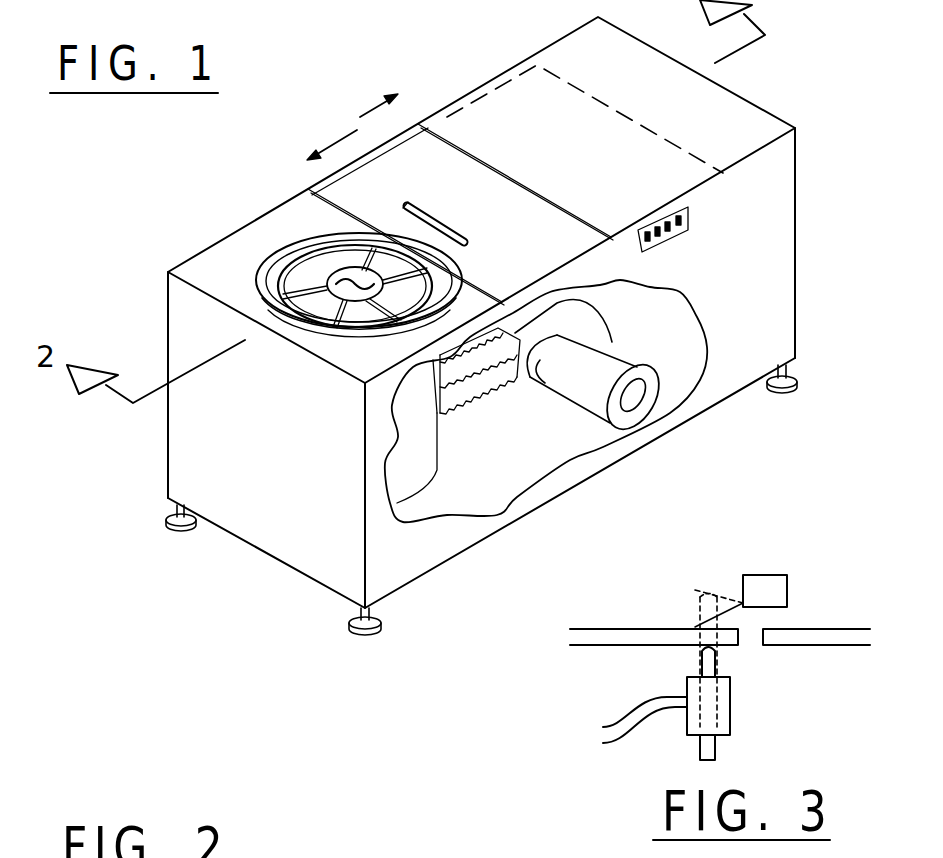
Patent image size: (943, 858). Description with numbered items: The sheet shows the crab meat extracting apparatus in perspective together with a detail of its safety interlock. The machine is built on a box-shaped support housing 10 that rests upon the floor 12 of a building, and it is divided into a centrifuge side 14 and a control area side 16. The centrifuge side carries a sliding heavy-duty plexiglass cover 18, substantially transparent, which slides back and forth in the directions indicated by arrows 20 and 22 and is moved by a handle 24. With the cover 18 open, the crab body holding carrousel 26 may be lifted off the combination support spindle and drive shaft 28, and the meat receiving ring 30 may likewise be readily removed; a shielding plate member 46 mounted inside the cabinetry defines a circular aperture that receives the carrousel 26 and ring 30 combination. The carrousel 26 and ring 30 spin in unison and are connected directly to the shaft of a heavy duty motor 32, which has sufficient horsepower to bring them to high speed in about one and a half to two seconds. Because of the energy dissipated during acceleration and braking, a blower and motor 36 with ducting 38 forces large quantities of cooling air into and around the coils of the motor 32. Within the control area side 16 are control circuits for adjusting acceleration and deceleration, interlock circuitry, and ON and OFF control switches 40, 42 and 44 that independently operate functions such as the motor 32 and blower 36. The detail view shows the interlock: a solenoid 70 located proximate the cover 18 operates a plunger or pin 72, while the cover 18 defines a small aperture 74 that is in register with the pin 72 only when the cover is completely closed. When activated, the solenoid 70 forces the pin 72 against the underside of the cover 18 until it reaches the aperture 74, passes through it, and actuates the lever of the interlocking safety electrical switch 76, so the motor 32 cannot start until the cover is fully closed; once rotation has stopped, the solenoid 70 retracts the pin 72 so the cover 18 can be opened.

In FIG. 1, the housing 10 is at (207, 443).
In FIG. 1, the floor 12 is at (494, 625).
In FIG. 1, the centrifuge side 14 is at (243, 260).
In FIG. 1, the control area side 16 is at (606, 66).
In FIG. 1, the sliding plexiglass cover 18 is at (507, 230).
In FIG. 3, the sliding plexiglass cover 18 is at (813, 637).
In FIG. 1, the arrow 20 is at (368, 103).
In FIG. 1, the arrow 22 is at (340, 142).
In FIG. 1, the handle 24 is at (448, 218).
In FIG. 1, the crab body holding carrousel 26 is at (297, 263).
In FIG. 1, the combination support spindle and drive shaft 28 is at (358, 283).
In FIG. 1, the meat receiving ring 30 is at (312, 328).
In FIG. 1, the heavy duty motor 32 is at (424, 459).
In FIG. 1, the blower and motor 36 is at (618, 420).
In FIG. 1, the ducting 38 is at (480, 383).
In FIG. 1, the control switch 40 is at (647, 248).
In FIG. 1, the control switch 42 is at (660, 238).
In FIG. 1, the control switch 44 is at (678, 229).
In FIG. 1, the shielding plate member 46 is at (240, 293).
In FIG. 3, the interlock solenoid 70 is at (722, 705).
In FIG. 3, the plunger or pin 72 is at (710, 667).
In FIG. 3, the aperture 74 is at (750, 640).
In FIG. 3, the interlocking safety electrical switch 76 is at (762, 590).